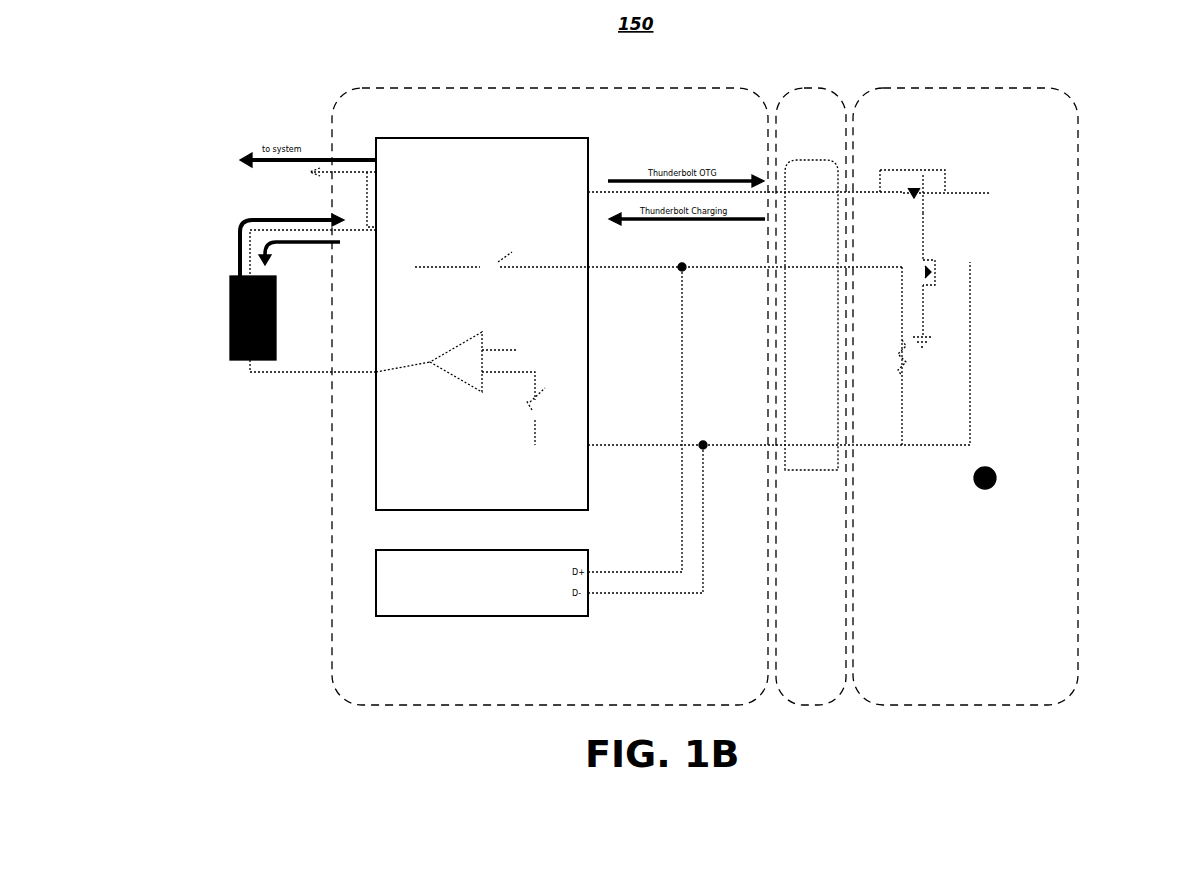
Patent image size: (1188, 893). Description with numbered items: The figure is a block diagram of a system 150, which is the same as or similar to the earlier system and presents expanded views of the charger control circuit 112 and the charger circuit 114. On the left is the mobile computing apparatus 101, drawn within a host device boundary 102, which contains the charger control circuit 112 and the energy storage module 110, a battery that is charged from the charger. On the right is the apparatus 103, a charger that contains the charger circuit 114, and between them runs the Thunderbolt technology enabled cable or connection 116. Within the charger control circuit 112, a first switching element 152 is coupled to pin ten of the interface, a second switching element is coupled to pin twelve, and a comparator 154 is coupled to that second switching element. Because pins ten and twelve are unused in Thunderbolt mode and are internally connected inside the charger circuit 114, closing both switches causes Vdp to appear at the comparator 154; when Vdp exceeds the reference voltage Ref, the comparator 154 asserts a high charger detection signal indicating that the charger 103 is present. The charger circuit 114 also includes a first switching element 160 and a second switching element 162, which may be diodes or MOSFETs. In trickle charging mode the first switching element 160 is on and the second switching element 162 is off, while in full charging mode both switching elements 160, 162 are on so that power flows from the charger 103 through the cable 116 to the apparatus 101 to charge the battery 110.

The system 150 is at (520, 425).
The apparatus 101 is at (238, 157).
The host device 102 is at (430, 88).
The apparatus 103 is at (912, 88).
The cable or connection 116 is at (800, 88).
The energy storage module 110 is at (228, 327).
The charger control circuit 112 is at (397, 493).
The charger circuit 114 is at (940, 377).
The first switching element 152 is at (487, 243).
The comparator 154 is at (448, 378).
The first switching element 160 is at (955, 280).
The second switching element 162 is at (908, 193).